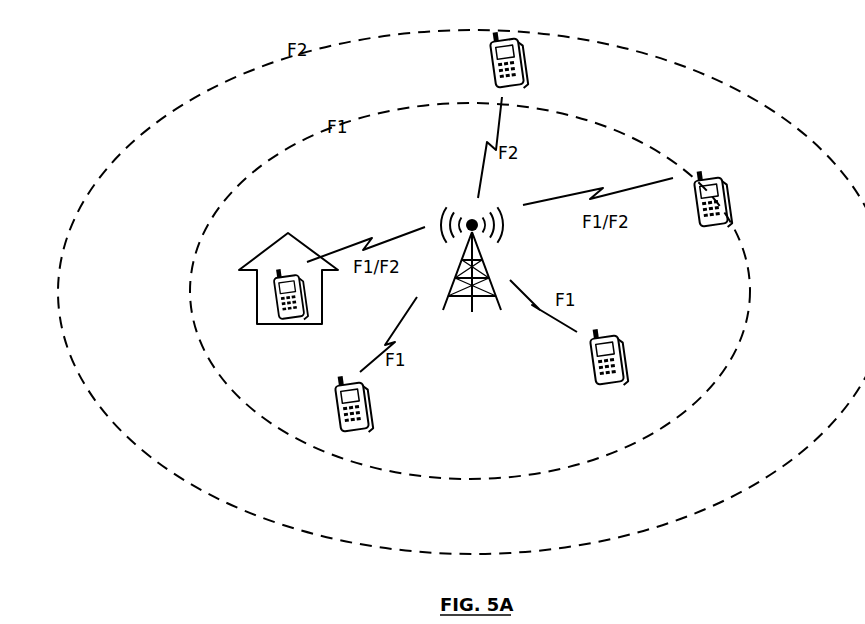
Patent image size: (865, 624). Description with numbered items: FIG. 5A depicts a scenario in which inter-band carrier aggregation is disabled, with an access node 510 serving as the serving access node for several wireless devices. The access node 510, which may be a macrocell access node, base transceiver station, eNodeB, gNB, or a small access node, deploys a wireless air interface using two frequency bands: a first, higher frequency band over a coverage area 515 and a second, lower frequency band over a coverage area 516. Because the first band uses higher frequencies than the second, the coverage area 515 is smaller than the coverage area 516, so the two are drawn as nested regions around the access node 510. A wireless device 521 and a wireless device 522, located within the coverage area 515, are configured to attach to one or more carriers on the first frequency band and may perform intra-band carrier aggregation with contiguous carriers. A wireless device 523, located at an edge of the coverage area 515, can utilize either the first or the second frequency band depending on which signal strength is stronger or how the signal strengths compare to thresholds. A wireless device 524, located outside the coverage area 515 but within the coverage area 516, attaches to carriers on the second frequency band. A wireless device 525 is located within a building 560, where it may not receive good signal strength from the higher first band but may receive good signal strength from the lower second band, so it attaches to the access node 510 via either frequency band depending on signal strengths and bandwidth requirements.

The access node 510 is at (470, 218).
The coverage area 515 is at (305, 140).
The coverage area 516 is at (255, 70).
The wireless device 521 is at (338, 422).
The wireless device 522 is at (606, 382).
The wireless device 523 is at (727, 183).
The wireless device 524 is at (523, 74).
The wireless device 525 is at (272, 300).
The building 560 is at (268, 253).